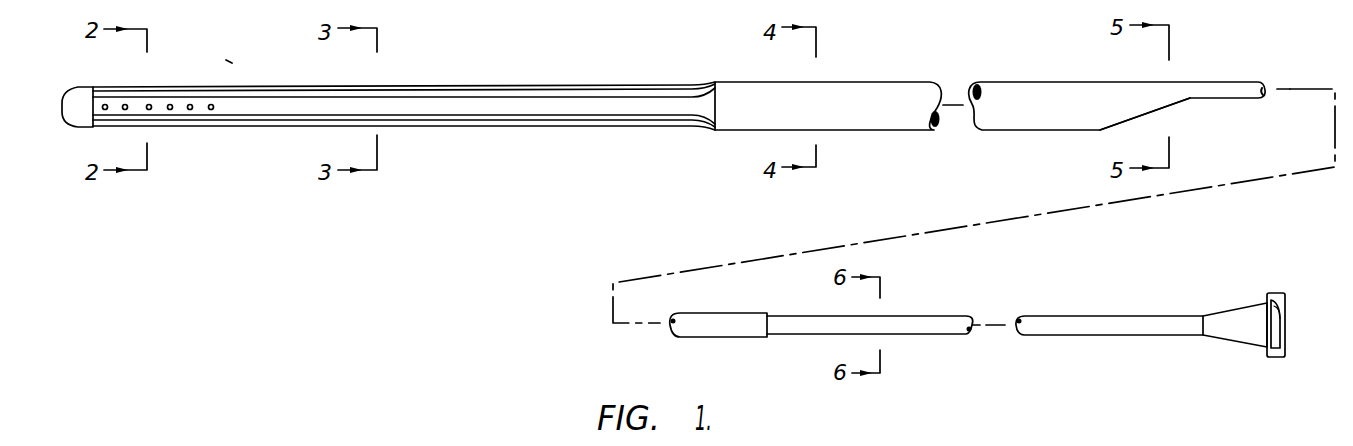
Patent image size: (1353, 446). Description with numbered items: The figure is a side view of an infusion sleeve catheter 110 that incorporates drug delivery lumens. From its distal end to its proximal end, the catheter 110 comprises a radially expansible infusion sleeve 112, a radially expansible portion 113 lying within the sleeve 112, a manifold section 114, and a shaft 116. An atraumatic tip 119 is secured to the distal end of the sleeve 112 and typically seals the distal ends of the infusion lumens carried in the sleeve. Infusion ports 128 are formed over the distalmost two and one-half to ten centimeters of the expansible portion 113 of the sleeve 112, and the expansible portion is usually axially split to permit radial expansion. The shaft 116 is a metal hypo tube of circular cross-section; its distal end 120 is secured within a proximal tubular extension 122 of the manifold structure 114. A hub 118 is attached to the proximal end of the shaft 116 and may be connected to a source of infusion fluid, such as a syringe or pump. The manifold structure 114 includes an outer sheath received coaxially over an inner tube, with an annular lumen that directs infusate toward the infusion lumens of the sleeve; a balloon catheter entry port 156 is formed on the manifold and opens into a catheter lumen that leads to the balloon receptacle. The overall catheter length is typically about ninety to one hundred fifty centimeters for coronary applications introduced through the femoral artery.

The infusion sleeve catheter 110 is at (904, 47).
The radially expansible infusion sleeve 112 is at (498, 107).
The radially expansible portion 113 is at (229, 62).
The manifold section 114 is at (855, 115).
The shaft 116 is at (1070, 317).
The hub 118 is at (1243, 330).
The atraumatic tip 119 is at (82, 107).
The distal end of the shaft 120 is at (712, 327).
The proximal tubular extension 122 is at (1227, 82).
The infusion ports 128 is at (170, 110).
The balloon catheter entry port 156 is at (1194, 108).